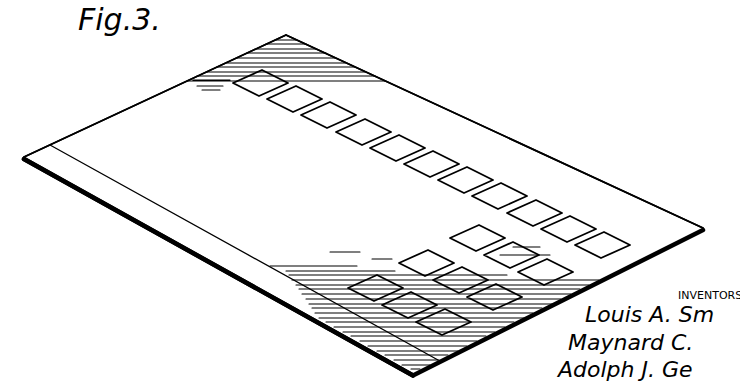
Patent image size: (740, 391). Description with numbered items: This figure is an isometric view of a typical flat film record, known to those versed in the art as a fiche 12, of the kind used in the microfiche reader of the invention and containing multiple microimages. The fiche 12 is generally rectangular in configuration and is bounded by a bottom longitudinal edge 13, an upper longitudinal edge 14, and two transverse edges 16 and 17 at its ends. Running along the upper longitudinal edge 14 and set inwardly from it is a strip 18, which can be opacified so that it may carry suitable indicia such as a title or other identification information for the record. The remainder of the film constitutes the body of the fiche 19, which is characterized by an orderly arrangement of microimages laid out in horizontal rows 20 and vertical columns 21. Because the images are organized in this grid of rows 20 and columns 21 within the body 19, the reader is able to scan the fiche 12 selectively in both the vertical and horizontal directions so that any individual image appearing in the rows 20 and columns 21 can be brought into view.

The fiche 12 is at (410, 92).
The bottom longitudinal edge 13 is at (497, 133).
The upper longitudinal edge 14 is at (265, 290).
The transverse edge 16 is at (137, 103).
The transverse edge 17 is at (488, 342).
The strip 18 is at (192, 237).
The body of the fiche 19 is at (208, 85).
The horizontal rows 20 is at (597, 245).
The vertical columns 21 is at (540, 203).